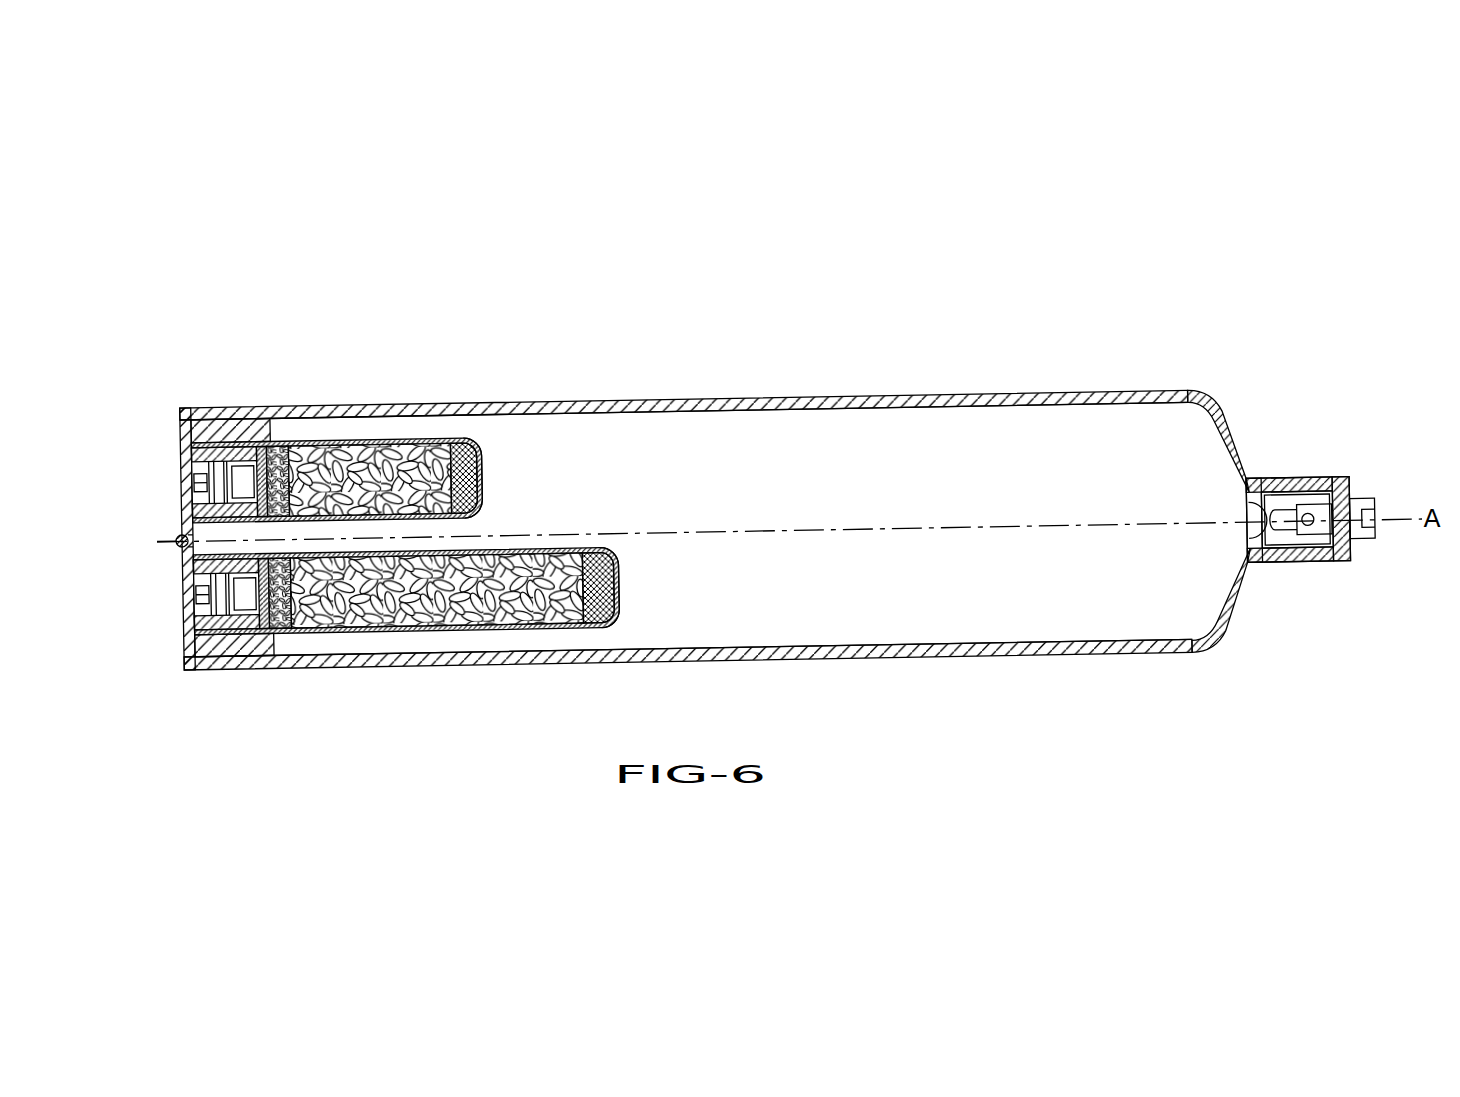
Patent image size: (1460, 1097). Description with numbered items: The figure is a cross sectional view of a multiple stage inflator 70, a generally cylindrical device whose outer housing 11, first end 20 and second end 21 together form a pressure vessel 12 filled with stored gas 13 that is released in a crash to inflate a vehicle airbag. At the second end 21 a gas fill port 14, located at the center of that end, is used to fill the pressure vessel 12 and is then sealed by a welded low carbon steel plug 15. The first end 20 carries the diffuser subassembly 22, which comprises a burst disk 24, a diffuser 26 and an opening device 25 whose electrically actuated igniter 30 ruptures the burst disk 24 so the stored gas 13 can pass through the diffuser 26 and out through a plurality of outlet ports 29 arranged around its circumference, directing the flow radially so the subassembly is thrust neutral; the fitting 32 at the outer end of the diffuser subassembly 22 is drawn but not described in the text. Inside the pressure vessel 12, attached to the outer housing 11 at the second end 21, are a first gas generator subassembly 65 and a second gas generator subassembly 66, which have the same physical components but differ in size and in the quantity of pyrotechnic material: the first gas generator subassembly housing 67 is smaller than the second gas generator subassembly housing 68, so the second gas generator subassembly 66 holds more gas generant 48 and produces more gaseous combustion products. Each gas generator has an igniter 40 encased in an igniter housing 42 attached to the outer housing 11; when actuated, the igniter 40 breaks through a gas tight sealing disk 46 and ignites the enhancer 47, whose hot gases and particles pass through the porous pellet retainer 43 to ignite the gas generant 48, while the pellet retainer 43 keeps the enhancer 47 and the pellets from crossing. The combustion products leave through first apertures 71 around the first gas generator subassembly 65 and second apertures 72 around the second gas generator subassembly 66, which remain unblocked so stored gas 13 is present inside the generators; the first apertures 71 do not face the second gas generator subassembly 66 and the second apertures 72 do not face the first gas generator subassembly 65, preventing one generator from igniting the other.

The multiple stage inflator 70 is at (638, 330).
The outer housing 11 is at (805, 400).
The pressure vessel 12 is at (958, 440).
The stored gas 13 is at (935, 600).
The gas fill port 14 is at (181, 548).
The plug 15 is at (177, 539).
The first end 20 is at (1190, 392).
The second end 21 is at (216, 407).
The diffuser subassembly 22 is at (1287, 440).
The burst disk 24 is at (1253, 528).
The opening device 25 is at (1349, 575).
The diffuser 26 is at (1259, 565).
The outlet ports 29 is at (1317, 556).
The igniter 30 is at (1345, 478).
The outlet fitting 32 is at (1360, 492).
The igniter 40 is at (226, 480).
The igniter housing 42 is at (203, 431).
The pellet retainer 43 is at (316, 460).
The gas tight sealing disk 46 is at (272, 456).
The enhancer 47 is at (293, 462).
The gas generant 48 is at (441, 468).
The first gas generator subassembly 65 is at (375, 440).
The second gas generator subassembly 66 is at (446, 652).
The first gas generator subassembly housing 67 is at (490, 478).
The second gas generator subassembly housing 68 is at (622, 592).
The first apertures 71 is at (410, 458).
The second apertures 72 is at (525, 615).